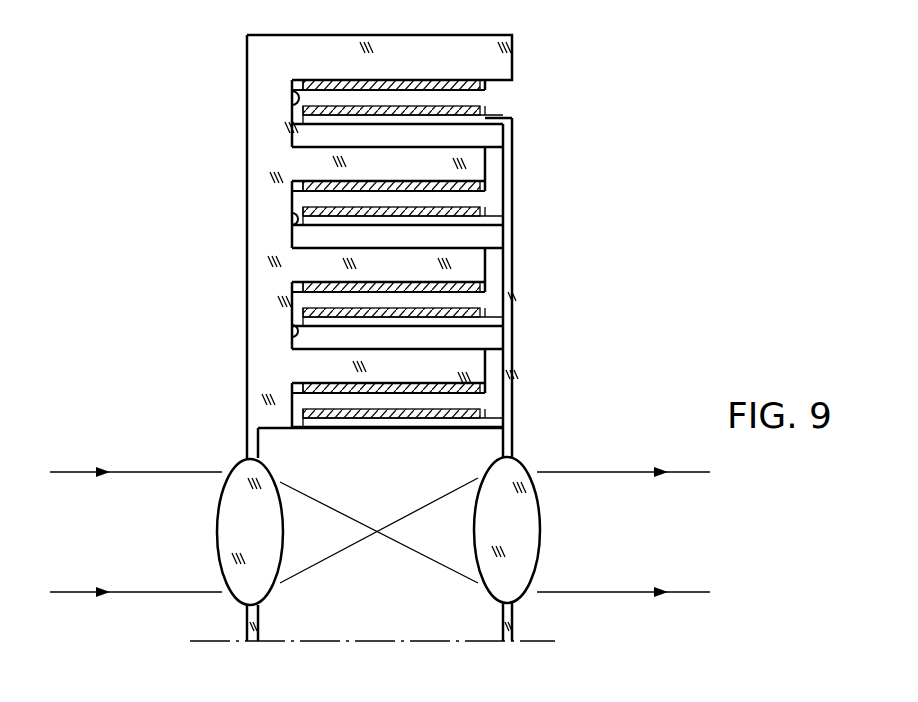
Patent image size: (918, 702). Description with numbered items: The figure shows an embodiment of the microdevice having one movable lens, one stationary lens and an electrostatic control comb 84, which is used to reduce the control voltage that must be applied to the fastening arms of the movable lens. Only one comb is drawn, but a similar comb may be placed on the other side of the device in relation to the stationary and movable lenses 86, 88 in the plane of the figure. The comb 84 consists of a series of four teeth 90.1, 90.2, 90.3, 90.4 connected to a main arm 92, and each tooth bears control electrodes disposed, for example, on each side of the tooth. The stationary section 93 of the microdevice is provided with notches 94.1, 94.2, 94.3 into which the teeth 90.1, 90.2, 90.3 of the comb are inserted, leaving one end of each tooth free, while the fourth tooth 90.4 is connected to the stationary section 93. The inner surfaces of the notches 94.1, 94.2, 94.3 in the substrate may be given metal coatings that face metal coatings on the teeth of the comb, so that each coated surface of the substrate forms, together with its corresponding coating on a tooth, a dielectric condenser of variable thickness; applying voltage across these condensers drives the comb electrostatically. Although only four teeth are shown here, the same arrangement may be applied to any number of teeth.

The electrostatic control comb 84 is at (538, 270).
The stationary lens 86 is at (240, 468).
The movable lens 88 is at (539, 542).
The tooth 90.1 is at (493, 121).
The tooth 90.2 is at (493, 219).
The tooth 90.3 is at (492, 320).
The tooth 90.4 is at (492, 426).
The main arm 92 is at (514, 364).
The stationary section 93 is at (262, 149).
The notch 94.1 is at (292, 95).
The notch 94.2 is at (292, 224).
The notch 94.3 is at (292, 336).